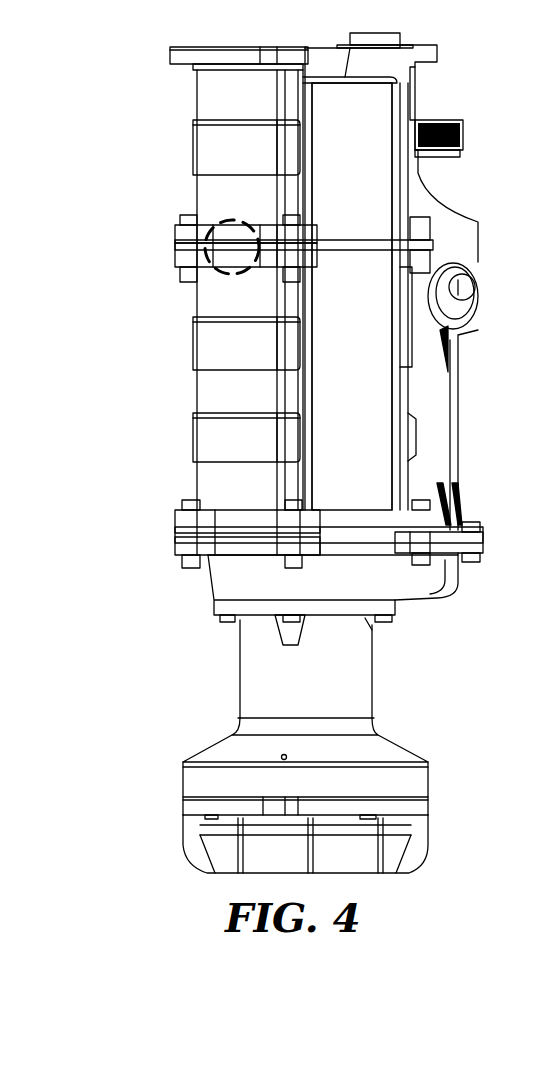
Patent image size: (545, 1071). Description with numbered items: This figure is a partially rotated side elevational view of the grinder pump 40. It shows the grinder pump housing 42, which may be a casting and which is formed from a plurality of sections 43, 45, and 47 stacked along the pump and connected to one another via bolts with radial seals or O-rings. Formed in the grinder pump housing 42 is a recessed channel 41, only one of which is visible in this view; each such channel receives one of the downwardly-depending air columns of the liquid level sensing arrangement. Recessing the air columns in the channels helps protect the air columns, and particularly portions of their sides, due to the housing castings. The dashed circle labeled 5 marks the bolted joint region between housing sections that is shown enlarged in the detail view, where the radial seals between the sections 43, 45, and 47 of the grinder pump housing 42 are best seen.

The grinder pump 40 is at (140, 282).
The recessed channel 41 is at (352, 296).
The grinder pump housing 42 is at (190, 338).
The section 43 is at (225, 580).
The section 45 is at (195, 437).
The section 47 is at (204, 143).
The clamp region (detail of FIG. 5) 5 is at (215, 225).